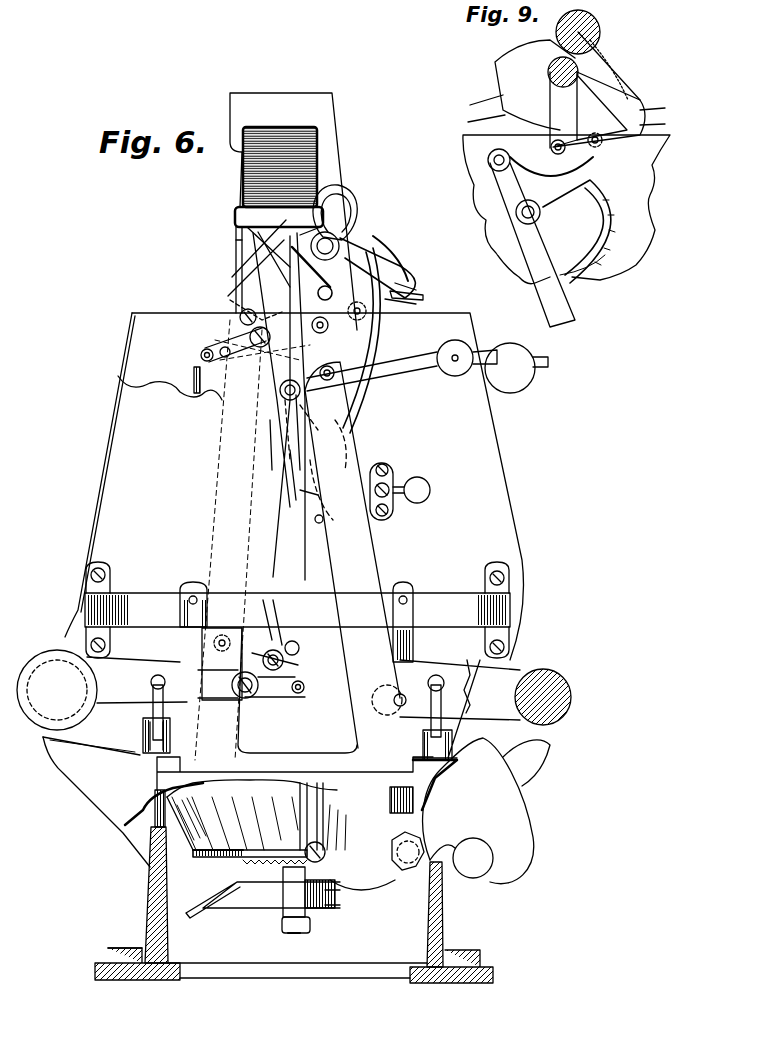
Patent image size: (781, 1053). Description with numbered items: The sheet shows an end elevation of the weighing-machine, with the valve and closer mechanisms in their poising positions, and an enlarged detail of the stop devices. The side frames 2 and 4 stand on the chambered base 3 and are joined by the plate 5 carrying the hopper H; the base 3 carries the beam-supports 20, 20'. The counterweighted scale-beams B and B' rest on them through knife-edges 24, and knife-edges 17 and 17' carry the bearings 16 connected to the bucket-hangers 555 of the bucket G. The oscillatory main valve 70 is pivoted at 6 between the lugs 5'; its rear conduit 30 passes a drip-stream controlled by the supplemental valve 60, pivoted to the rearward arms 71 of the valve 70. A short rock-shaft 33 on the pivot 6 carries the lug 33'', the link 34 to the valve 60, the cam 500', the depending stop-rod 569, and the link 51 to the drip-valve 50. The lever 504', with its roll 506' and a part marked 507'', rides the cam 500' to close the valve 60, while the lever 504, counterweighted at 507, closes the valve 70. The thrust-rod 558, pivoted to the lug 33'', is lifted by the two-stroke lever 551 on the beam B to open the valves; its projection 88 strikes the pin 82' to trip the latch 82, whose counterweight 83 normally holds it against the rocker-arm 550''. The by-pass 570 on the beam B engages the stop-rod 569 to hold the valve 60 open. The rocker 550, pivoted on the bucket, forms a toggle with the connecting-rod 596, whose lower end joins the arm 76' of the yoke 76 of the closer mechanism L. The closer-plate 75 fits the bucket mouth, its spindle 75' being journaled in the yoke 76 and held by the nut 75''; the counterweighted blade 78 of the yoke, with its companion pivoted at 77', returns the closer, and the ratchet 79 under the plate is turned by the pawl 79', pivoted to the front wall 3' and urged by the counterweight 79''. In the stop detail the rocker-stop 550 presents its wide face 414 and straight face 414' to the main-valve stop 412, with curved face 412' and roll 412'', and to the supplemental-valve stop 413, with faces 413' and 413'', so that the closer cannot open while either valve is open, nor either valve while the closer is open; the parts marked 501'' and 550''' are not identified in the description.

In FIG. 6, the chute or hopper H is at (333, 144).
In FIG. 6, the plate or beam 5 is at (264, 167).
In FIG. 6, the lug or ear 33'' is at (279, 217).
In FIG. 6, the arms or lugs 5' is at (355, 212).
In FIG. 6, the pivot 6 is at (340, 246).
In FIG. 6, the valve-stop 412 is at (355, 243).
In FIG. 9, the valve-stop 412 is at (610, 90).
In FIG. 6, the supplemental-valve stop 413 is at (385, 267).
In FIG. 9, the supplemental-valve stop 413 is at (616, 109).
In FIG. 6, the main valve 70 is at (414, 276).
In FIG. 9, the main valve 70 is at (497, 81).
In FIG. 6, the curved stop-face 412' is at (422, 285).
In FIG. 9, the curved stop-face 412' is at (669, 106).
In FIG. 6, the stop-face 413' is at (417, 304).
In FIG. 9, the stop-face 413' is at (669, 122).
In FIG. 6, the side frame 4 is at (236, 241).
In FIG. 6, the rear discharge-outlet or conduit 30 is at (255, 262).
In FIG. 9, the rear discharge-outlet or conduit 30 is at (480, 104).
In FIG. 6, the rearward-extending arm 71 is at (262, 285).
In FIG. 9, the rearward-extending arm 71 is at (477, 120).
In FIG. 6, the antifriction-roll 506' is at (228, 301).
In FIG. 6, the supplemental valve 60 is at (240, 316).
In FIG. 6, the link 51 is at (250, 336).
In FIG. 6, the drip-valve 50 is at (201, 355).
In FIG. 6, the rock-shaft 33 is at (291, 405).
In FIG. 9, the rock-shaft 33 is at (558, 48).
In FIG. 6, the link 34 is at (290, 268).
In FIG. 6, the stop (antifriction-roll) 412'' is at (378, 318).
In FIG. 9, the stop (antifriction-roll) 412'' is at (621, 147).
In FIG. 6, the cam 500' is at (362, 355).
In FIG. 6, the stop-face (roll) 413'' is at (355, 338).
In FIG. 9, the stop-face (roll) 413'' is at (537, 149).
In FIG. 6, the straight stop-face 414' is at (372, 373).
In FIG. 9, the straight stop-face 414' is at (578, 166).
In FIG. 6, the wide stop-face 414 is at (377, 340).
In FIG. 9, the wide stop-face 414 is at (596, 229).
In FIG. 6, the rocker 550 is at (373, 441).
In FIG. 9, the rocker 550 is at (599, 276).
In FIG. 6, the disk 507'' is at (478, 346).
In FIG. 6, the lever 504' is at (468, 375).
In FIG. 6, the counterweight 507 is at (511, 382).
In FIG. 6, the lever 504 is at (548, 376).
In FIG. 6, the latch 82 is at (382, 481).
In FIG. 6, the counterweight 83 is at (417, 485).
In FIG. 6, the bucket G is at (468, 496).
In FIG. 9, the bucket G is at (566, 209).
In FIG. 6, the projection 88 is at (312, 410).
In FIG. 6, the pin 82' is at (330, 530).
In FIG. 6, the pivot 501'' is at (261, 397).
In FIG. 6, the link 550''' is at (256, 430).
In FIG. 6, the stop-rod 569 is at (298, 425).
In FIG. 6, the connecting-rod 596 is at (272, 453).
In FIG. 6, the thrust or connecting rod 558 is at (293, 470).
In FIG. 6, the rocker-arm 550'' is at (270, 490).
In FIG. 9, the rocker-arm 550'' is at (563, 245).
In FIG. 6, the side frame 2 is at (370, 581).
In FIG. 6, the bucket-hangers 555 is at (432, 605).
In FIG. 6, the bearings 16 is at (180, 648).
In FIG. 6, the scale-beam B is at (102, 684).
In FIG. 6, the pivots or knife-edges 24 is at (152, 683).
In FIG. 6, the bracket 20 is at (133, 735).
In FIG. 6, the two-stroke lever 551 is at (103, 715).
In FIG. 6, the pivots or knife-edges 17 is at (251, 672).
In FIG. 6, the by-pass 570 is at (290, 668).
In FIG. 6, the pivots or knife-edges 17' is at (387, 716).
In FIG. 6, the scale-beam B' is at (485, 684).
In FIG. 6, the V-shaped bearings 20' is at (459, 735).
In FIG. 6, the supporting-base 3 is at (137, 885).
In FIG. 6, the front wall 3' is at (451, 922).
In FIG. 6, the closer mechanism L is at (290, 833).
In FIG. 6, the closer 75 is at (207, 867).
In FIG. 6, the ratchet 79 is at (290, 848).
In FIG. 6, the yoke 76 is at (263, 910).
In FIG. 6, the spindle or pivot 75' is at (308, 914).
In FIG. 6, the nut 75'' is at (271, 939).
In FIG. 6, the pawl 79' is at (338, 912).
In FIG. 6, the arm 76' is at (362, 906).
In FIG. 6, the pivot 77' is at (422, 844).
In FIG. 6, the counterweight 79'' is at (477, 849).
In FIG. 6, the counterweighted arm or blade 78 is at (528, 842).